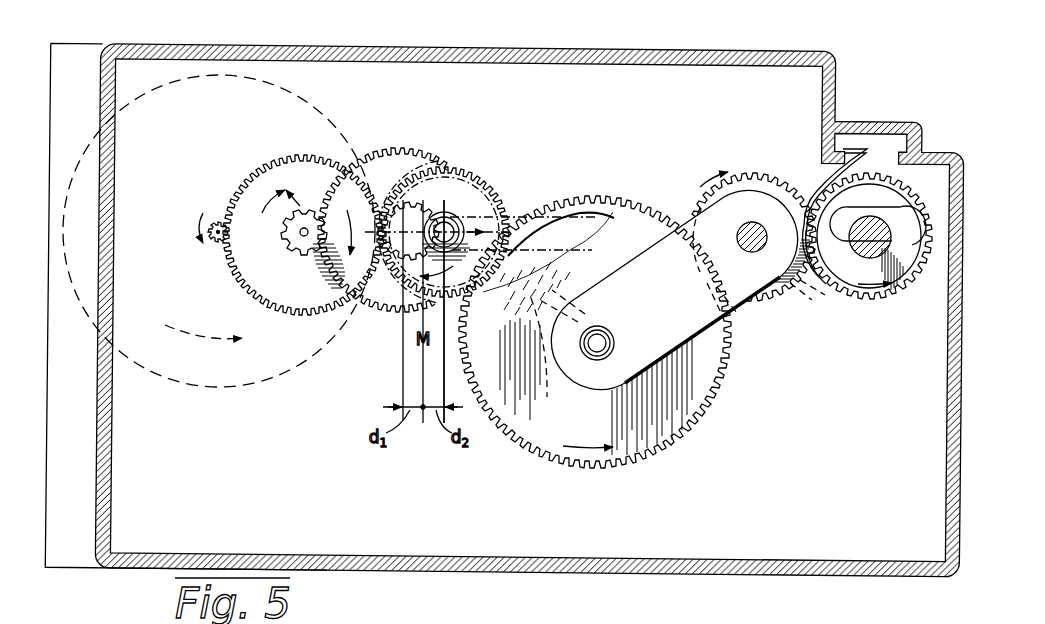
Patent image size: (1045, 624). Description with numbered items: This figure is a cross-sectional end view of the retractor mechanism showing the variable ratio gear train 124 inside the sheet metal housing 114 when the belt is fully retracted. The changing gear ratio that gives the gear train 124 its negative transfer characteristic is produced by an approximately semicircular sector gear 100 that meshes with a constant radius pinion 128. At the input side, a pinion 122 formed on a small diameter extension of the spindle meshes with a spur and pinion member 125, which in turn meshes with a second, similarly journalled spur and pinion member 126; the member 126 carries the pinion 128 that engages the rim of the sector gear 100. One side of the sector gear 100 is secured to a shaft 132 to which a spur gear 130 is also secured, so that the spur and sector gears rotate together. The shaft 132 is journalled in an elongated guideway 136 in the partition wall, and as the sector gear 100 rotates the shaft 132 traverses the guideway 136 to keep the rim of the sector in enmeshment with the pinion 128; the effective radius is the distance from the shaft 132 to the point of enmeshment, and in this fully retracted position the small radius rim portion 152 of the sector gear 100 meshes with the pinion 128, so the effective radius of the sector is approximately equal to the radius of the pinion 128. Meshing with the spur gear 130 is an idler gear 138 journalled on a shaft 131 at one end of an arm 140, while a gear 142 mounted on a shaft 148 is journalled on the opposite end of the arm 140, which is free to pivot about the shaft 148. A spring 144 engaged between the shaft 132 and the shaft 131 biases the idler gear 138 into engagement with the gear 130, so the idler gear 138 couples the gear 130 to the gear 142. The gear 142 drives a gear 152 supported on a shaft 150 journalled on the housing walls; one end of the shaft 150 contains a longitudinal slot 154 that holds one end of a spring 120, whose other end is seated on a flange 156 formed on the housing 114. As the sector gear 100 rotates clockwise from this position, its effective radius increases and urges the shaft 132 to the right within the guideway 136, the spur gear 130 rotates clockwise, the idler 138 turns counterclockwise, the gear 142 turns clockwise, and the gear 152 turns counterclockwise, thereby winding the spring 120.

The sector gear 100 is at (493, 200).
The housing 114 is at (568, 50).
The spring 120 is at (817, 187).
The pinion 122 is at (213, 242).
The gear train 124 is at (330, 400).
The spur and pinion member 125 is at (262, 153).
The spur and pinion member 126 is at (420, 150).
The pinion 128 is at (392, 300).
The spur gear 130 is at (403, 193).
The shaft 131 is at (612, 356).
The shaft 132 is at (453, 227).
The guideway 136 is at (535, 222).
The idler gear 138 is at (670, 453).
The arm 140 is at (683, 325).
The gear 142 is at (793, 290).
The spring 144 is at (678, 315).
The shaft 148 is at (756, 252).
The shaft 150 is at (890, 253).
The gear 152 is at (431, 206).
The longitudinal slot 154 is at (868, 215).
The flange 156 is at (818, 165).